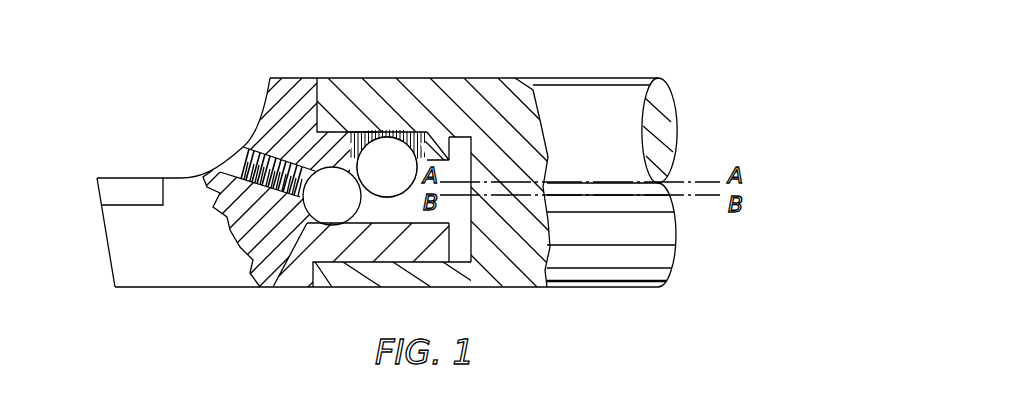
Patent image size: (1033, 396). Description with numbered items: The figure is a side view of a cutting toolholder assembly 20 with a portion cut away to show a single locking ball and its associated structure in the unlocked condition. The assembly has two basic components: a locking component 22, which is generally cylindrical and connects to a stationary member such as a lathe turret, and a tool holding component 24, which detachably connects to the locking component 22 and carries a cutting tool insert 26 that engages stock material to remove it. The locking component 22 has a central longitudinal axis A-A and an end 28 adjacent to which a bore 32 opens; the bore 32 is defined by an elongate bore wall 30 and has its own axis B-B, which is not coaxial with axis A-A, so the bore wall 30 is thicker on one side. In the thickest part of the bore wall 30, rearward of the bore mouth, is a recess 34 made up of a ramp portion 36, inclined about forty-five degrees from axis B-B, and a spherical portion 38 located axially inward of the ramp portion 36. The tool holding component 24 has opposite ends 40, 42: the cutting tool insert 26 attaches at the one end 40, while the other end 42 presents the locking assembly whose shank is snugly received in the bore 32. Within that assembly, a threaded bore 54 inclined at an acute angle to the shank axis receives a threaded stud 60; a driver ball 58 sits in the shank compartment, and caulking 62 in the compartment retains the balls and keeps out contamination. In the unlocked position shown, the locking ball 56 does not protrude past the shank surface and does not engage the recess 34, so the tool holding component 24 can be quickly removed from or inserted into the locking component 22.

The cutting toolholder assembly 20 is at (700, 112).
The locking component 22 is at (655, 244).
The tool holding component 24 is at (193, 285).
The cutting tool insert 26 is at (135, 178).
The one end of the locking component 28 is at (312, 270).
The bore wall 30 is at (386, 274).
The bore 32 is at (476, 182).
The recess 34 is at (414, 122).
The ramp portion 36 is at (383, 125).
The spherical portion 38 is at (398, 130).
The one end of the tool holding component 40 is at (110, 262).
The other end of the tool holding component 42 is at (470, 263).
The threaded bore 54 is at (220, 172).
The locking ball 56 is at (317, 78).
The driver ball 58 is at (287, 253).
The threaded stud 60 is at (243, 147).
The caulking 62 is at (476, 137).